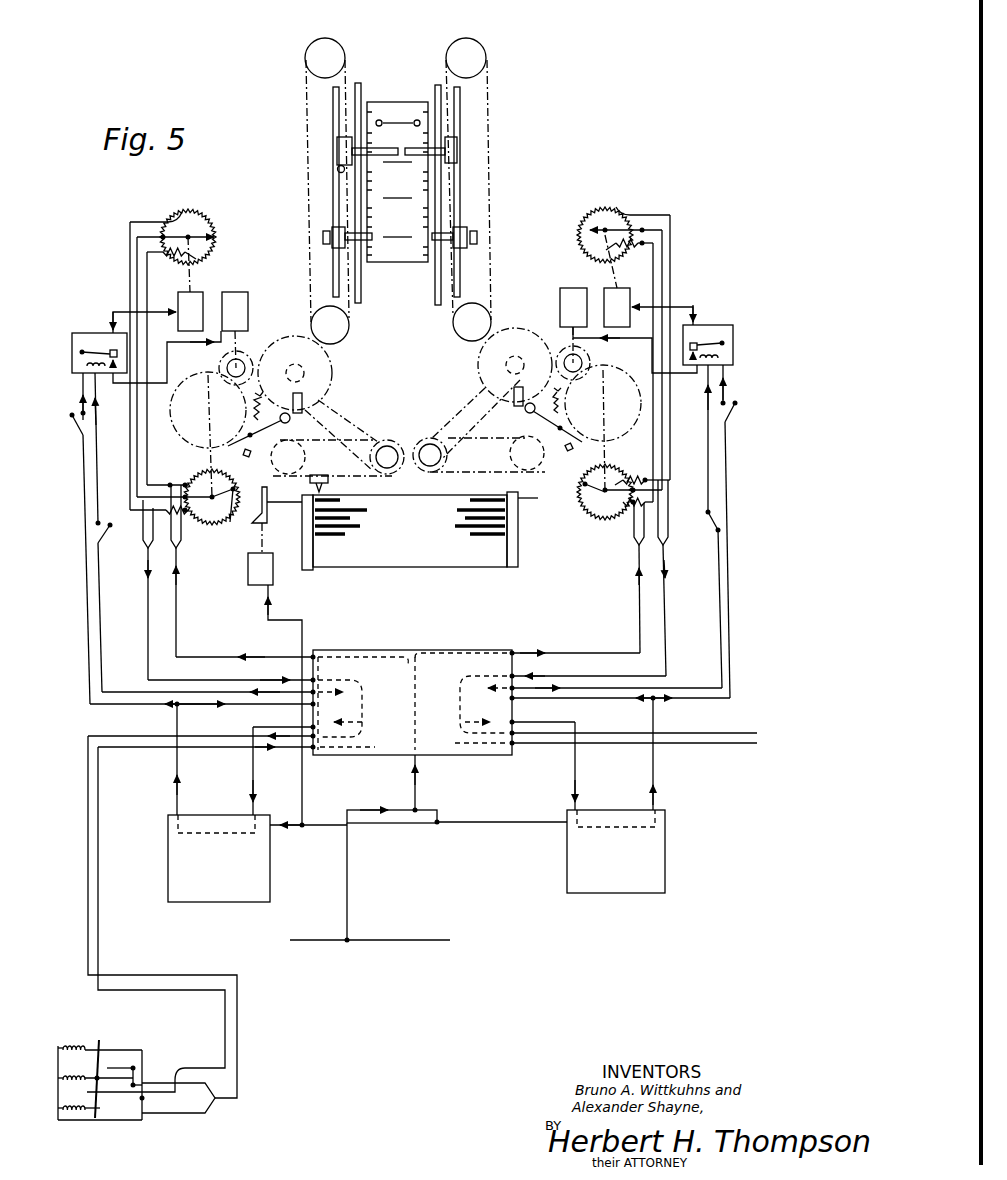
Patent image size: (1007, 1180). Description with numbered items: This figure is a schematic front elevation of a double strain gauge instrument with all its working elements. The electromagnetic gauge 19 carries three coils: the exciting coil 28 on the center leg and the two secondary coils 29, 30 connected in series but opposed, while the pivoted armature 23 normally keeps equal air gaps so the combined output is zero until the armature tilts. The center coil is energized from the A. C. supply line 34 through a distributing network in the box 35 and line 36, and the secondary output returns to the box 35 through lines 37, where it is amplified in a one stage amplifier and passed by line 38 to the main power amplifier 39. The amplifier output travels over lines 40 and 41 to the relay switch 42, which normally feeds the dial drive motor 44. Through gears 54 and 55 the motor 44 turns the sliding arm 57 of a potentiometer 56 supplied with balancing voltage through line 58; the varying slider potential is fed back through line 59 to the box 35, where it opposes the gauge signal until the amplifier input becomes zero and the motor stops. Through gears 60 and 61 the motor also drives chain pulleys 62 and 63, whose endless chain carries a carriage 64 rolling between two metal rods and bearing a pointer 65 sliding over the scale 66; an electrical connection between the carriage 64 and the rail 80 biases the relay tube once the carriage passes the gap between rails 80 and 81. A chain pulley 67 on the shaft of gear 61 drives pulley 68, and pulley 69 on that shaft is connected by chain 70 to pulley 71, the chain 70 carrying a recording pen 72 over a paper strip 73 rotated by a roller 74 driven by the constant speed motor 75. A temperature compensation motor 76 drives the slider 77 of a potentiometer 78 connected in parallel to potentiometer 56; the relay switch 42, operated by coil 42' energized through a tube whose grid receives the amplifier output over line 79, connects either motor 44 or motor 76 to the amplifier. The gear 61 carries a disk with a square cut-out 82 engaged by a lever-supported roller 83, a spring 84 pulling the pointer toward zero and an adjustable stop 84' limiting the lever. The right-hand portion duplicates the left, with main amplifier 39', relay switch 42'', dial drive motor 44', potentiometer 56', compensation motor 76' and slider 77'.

The electromagnetic gauge 19 is at (62, 1080).
The armature 23 is at (105, 1046).
The exciting coil 28 is at (62, 1075).
The secondary coil 29 is at (70, 1044).
The secondary coil 30 is at (72, 1114).
The A. C. supply line 34 is at (397, 942).
The box 35 is at (394, 757).
The line 36 is at (210, 1068).
The lines 37 is at (237, 1032).
The line 38 is at (272, 730).
The main power amplifier 39 is at (257, 858).
The main power amplifier 39' is at (616, 795).
The line 40 is at (180, 806).
The line 41 is at (88, 628).
The relay switch 42 is at (128, 502).
The coil 42' is at (70, 379).
The relay switch 42'' is at (671, 501).
The dial drive motor 44 is at (243, 297).
The dial drive motor 44' is at (562, 296).
The gear 54 is at (243, 362).
The gear 55 is at (196, 448).
The potentiometer 56 is at (212, 512).
The potentiometer 56' is at (605, 508).
The sliding arm 57 is at (231, 524).
The line 58 is at (177, 634).
The line 59 is at (148, 626).
The gear 60 is at (250, 355).
The gear 61 is at (333, 372).
The chain pulley 62 is at (349, 334).
The chain pulley 63 is at (339, 51).
The carriage 64 is at (338, 150).
The pointer 65 is at (340, 171).
The scale 66 is at (382, 100).
The chain pulley 67 is at (301, 357).
The chain pulley 68 is at (392, 442).
The pulley 69 is at (420, 445).
The chain 70 is at (318, 440).
The pulley 71 is at (280, 473).
The recording pen 72 is at (328, 480).
The strip of paper 73 is at (314, 532).
The roller 74 is at (518, 510).
The constant speed motor 75 is at (249, 588).
The temperature compensation motor 76 is at (201, 300).
The temperature compensation motor 76' is at (625, 296).
The slider 77 is at (201, 234).
The slider 77' is at (596, 233).
The potentiometer 78 is at (190, 210).
The line 79 is at (207, 709).
The rail 80 is at (362, 292).
The rail 81 is at (358, 90).
The square cut-out 82 is at (303, 402).
The lever-supported roller 83 is at (290, 421).
The spring 84 is at (397, 428).
The adjustable stop 84' is at (408, 450).